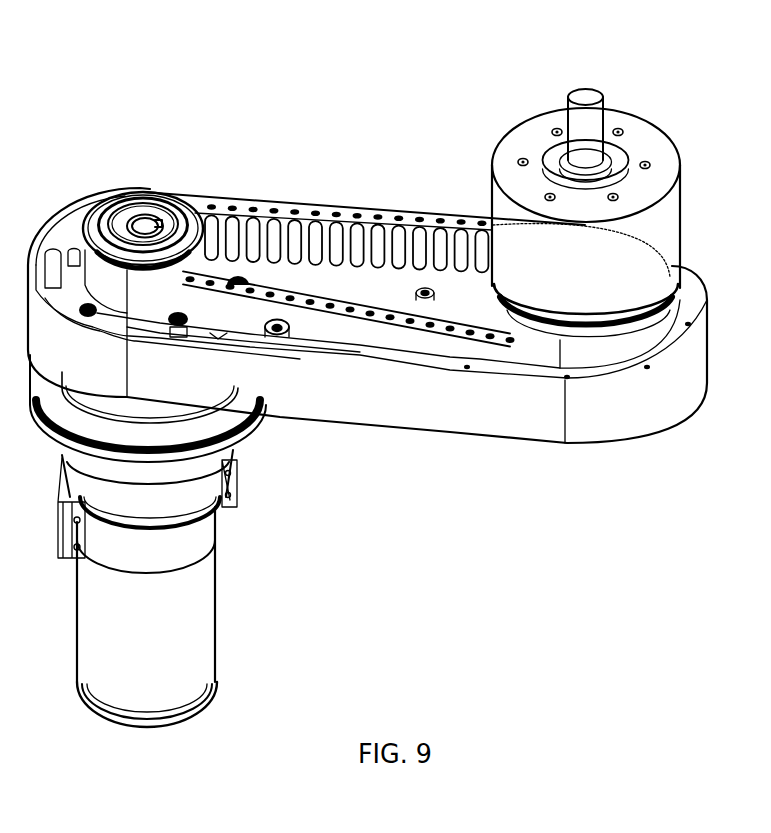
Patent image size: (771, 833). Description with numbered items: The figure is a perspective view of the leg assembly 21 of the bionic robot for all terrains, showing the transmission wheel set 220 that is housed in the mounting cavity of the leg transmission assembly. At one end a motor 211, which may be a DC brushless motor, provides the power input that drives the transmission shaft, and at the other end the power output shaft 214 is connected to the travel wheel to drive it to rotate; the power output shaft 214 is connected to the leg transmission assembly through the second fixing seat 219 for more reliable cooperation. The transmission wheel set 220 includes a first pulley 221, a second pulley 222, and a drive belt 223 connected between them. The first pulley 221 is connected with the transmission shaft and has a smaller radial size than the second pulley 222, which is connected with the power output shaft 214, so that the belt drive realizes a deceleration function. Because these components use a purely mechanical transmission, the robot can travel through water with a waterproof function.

The leg assembly 21 is at (97, 47).
The motor 211 is at (212, 597).
The power output shaft 214 is at (578, 121).
The second fixing seat 219 is at (513, 173).
The transmission wheel set 220 is at (155, 120).
The first pulley 221 is at (126, 218).
The second pulley 222 is at (500, 287).
The drive belt 223 is at (257, 225).